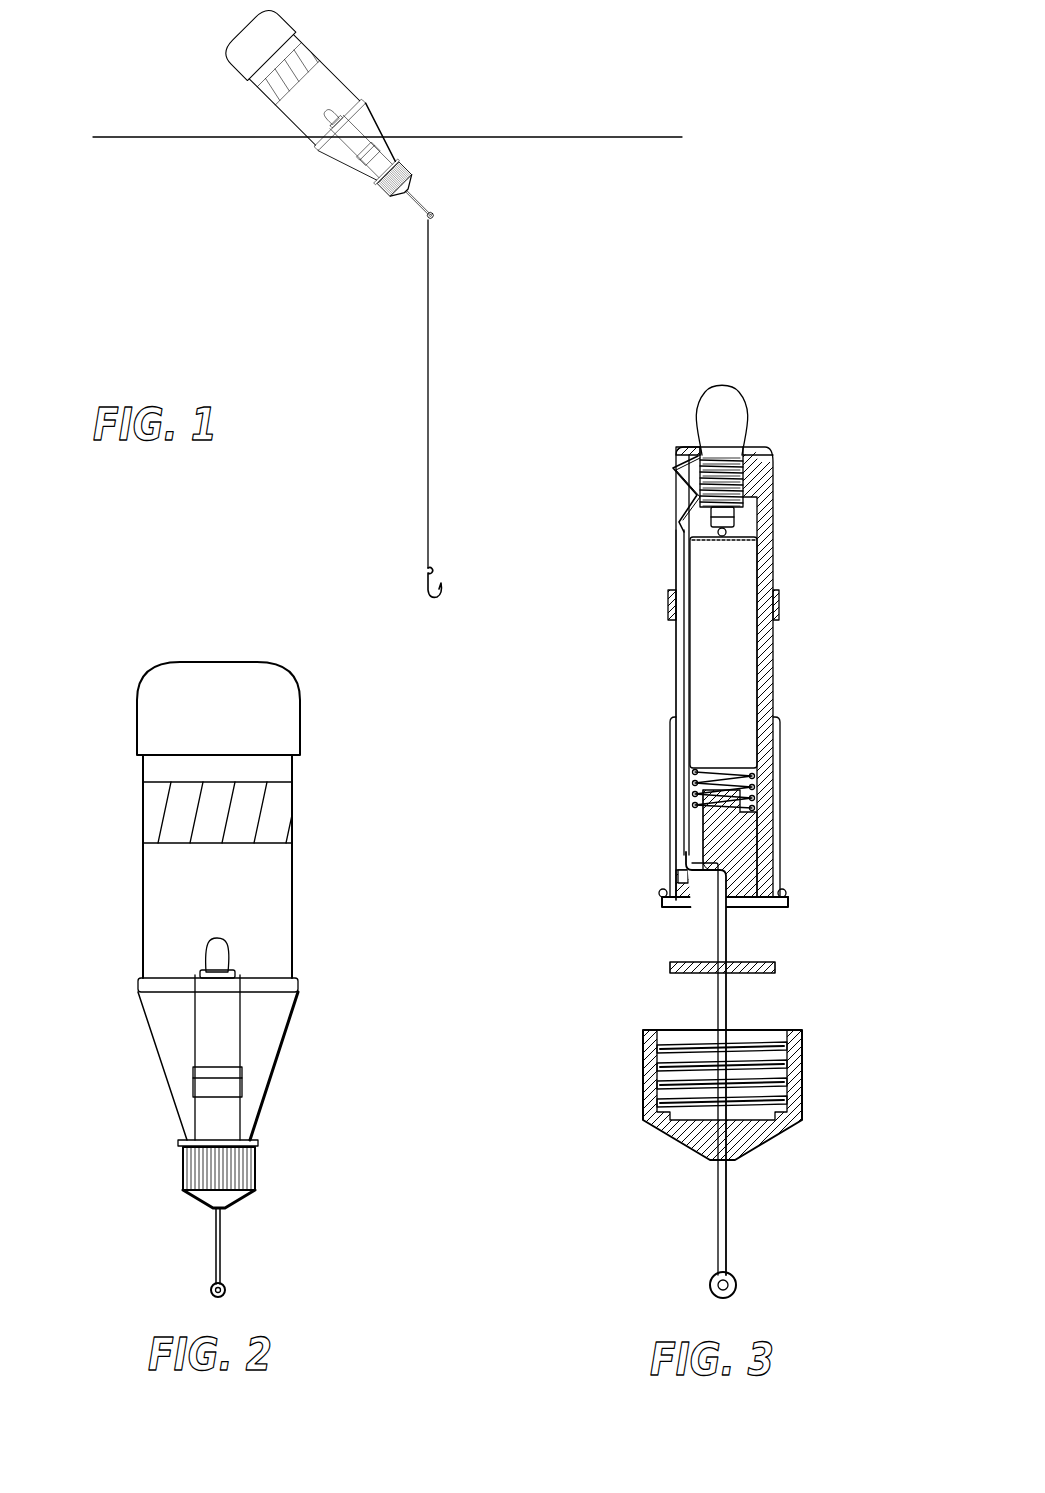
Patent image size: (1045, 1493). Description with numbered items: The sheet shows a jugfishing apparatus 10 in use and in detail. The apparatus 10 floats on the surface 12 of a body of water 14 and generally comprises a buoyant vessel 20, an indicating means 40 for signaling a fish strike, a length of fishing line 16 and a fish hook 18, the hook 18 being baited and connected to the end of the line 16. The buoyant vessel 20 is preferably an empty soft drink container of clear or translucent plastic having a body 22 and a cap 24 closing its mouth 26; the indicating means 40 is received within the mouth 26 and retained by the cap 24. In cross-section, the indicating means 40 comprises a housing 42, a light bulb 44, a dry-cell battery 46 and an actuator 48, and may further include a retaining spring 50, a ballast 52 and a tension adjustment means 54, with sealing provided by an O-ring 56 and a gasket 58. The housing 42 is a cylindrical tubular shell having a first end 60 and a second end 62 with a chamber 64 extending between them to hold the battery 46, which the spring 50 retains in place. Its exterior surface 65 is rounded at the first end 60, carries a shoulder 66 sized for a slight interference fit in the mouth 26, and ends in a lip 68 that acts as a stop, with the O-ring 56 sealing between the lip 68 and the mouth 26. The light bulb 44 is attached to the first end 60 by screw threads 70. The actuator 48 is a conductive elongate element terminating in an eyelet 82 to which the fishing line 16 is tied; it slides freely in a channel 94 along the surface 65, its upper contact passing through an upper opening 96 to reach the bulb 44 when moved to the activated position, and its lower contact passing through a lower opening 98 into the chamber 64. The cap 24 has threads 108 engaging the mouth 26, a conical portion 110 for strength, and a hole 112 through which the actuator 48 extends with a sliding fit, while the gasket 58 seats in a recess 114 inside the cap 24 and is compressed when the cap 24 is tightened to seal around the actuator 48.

In FIG. 1, the jugfishing apparatus 10 is at (360, 30).
In FIG. 1, the surface 12 is at (607, 135).
In FIG. 1, the body of water 14 is at (525, 243).
In FIG. 1, the fishing line 16 is at (429, 443).
In FIG. 1, the fish hook 18 is at (424, 576).
In FIG. 1, the buoyant vessel 20 is at (315, 123).
In FIG. 2, the buoyant vessel 20 is at (207, 953).
In FIG. 1, the body 22 is at (315, 100).
In FIG. 2, the body 22 is at (143, 876).
In FIG. 1, the cap 24 is at (397, 181).
In FIG. 2, the cap 24 is at (258, 1166).
In FIG. 3, the cap 24 is at (748, 1112).
In FIG. 2, the mouth 26 is at (205, 1209).
In FIG. 1, the indicating means 40 is at (364, 124).
In FIG. 2, the indicating means 40 is at (258, 1032).
In FIG. 3, the indicating means 40 is at (850, 388).
In FIG. 3, the housing 42 is at (751, 668).
In FIG. 3, the light bulb 44 is at (737, 398).
In FIG. 3, the dry-cell battery 46 is at (707, 562).
In FIG. 3, the actuator 48 is at (676, 665).
In FIG. 3, the retaining spring 50 is at (757, 785).
In FIG. 3, the ballast 52 is at (690, 905).
In FIG. 3, the tension adjustment means 54 is at (650, 605).
In FIG. 3, the O-ring 56 is at (786, 890).
In FIG. 3, the gasket 58 is at (778, 965).
In FIG. 3, the first end 60 is at (770, 453).
In FIG. 3, the second end 62 is at (775, 910).
In FIG. 3, the chamber 64 is at (752, 532).
In FIG. 3, the exterior surface 65 is at (775, 648).
In FIG. 3, the shoulder 66 is at (780, 718).
In FIG. 3, the lip 68 is at (790, 903).
In FIG. 3, the screw threads 70 is at (700, 455).
In FIG. 1, the eyelet 82 is at (419, 204).
In FIG. 2, the eyelet 82 is at (227, 1290).
In FIG. 3, the eyelet 82 is at (740, 1282).
In FIG. 3, the channel 94 is at (676, 853).
In FIG. 3, the upper opening 96 is at (680, 493).
In FIG. 3, the lower opening 98 is at (686, 862).
In FIG. 3, the threads 108 is at (788, 1080).
In FIG. 3, the conical portion 110 is at (746, 1150).
In FIG. 3, the hole 112 is at (714, 1160).
In FIG. 3, the recess 114 is at (663, 1124).